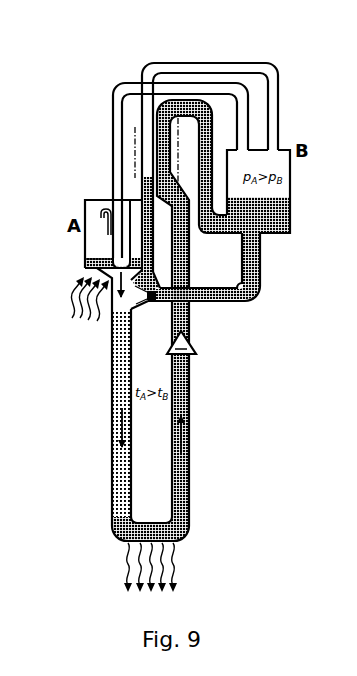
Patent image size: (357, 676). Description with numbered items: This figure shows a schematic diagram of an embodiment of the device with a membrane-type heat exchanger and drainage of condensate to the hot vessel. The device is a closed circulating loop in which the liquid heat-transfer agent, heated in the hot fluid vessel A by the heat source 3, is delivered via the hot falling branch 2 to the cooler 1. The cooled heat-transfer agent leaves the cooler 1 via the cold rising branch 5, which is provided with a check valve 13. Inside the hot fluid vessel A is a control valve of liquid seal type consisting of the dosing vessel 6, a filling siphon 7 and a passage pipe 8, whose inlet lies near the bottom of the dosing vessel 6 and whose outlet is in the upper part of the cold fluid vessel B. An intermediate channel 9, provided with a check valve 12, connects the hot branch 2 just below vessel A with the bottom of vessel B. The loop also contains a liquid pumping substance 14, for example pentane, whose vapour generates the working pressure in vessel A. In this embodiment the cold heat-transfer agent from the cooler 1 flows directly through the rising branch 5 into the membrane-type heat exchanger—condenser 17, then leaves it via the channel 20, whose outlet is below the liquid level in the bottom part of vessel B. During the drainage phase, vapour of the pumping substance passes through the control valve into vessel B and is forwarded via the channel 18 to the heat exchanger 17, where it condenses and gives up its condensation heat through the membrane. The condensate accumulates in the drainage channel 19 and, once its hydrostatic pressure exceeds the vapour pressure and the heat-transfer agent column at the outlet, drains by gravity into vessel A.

The cooler 1 is at (175, 562).
The hot falling branch 2 is at (110, 442).
The heat source 3 is at (89, 309).
The cold rising branch 5 is at (192, 462).
The dosing vessel 6 is at (103, 200).
The filling siphon 7 is at (104, 212).
The passage pipe 8 is at (143, 197).
The intermediate channel 9 is at (243, 300).
The check valve 12 is at (160, 301).
The check valve 13 is at (179, 360).
The liquid pumping substance 14 is at (95, 266).
The membrane-type heat exchanger—condenser 17 is at (135, 127).
The channel 18 is at (280, 100).
The drainage channel 19 is at (140, 183).
The channel 20 is at (163, 107).